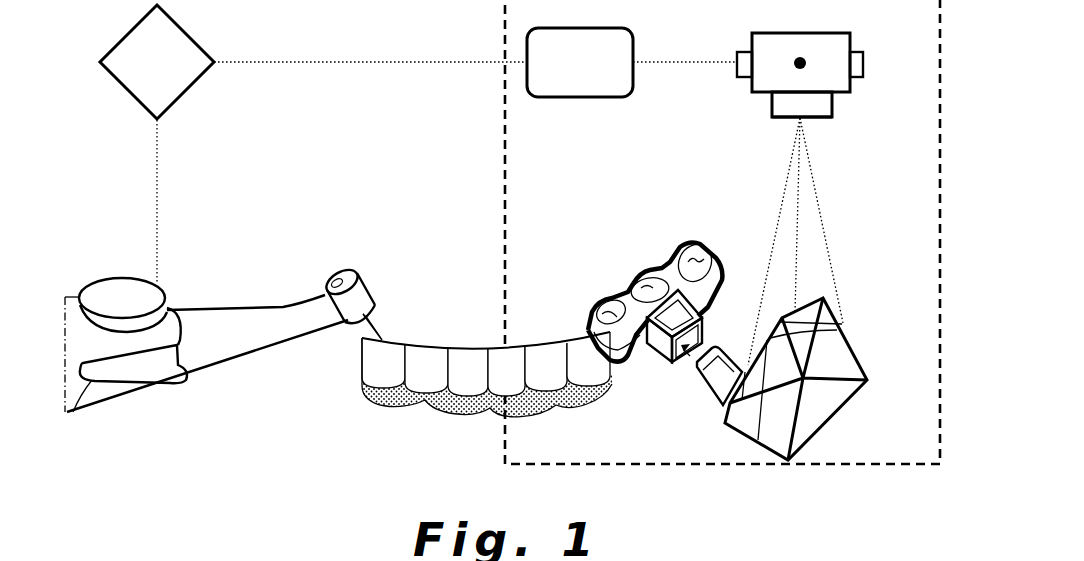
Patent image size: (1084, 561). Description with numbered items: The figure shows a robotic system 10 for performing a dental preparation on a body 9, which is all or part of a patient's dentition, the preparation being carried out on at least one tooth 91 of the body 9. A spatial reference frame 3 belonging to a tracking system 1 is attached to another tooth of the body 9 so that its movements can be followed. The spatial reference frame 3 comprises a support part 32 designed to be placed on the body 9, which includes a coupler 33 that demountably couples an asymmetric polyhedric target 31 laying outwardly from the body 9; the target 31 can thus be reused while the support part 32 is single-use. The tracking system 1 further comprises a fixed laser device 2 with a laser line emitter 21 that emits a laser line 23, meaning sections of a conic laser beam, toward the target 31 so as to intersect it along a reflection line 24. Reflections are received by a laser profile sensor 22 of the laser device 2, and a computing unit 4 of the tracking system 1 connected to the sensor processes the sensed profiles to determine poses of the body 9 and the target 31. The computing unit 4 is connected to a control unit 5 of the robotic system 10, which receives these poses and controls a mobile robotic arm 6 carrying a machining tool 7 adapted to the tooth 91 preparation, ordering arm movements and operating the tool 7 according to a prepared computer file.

The tracking system 1 is at (897, 482).
The laser device 2 is at (775, 47).
The laser line emitter 21 is at (778, 129).
The laser profile sensor 22 is at (813, 103).
The laser line 23 is at (790, 220).
The reflection line 24 is at (843, 320).
The spatial reference frame 3 is at (638, 408).
The asymmetric polyhedric target 31 is at (825, 403).
The support part 32 is at (653, 268).
The coupler 33 is at (702, 378).
The computing unit 4 is at (571, 76).
The control unit 5 is at (149, 76).
The mobile robotic arm 6 is at (102, 390).
The machining tool 7 is at (290, 320).
The body 9 is at (440, 307).
The tooth 91 is at (372, 372).
The robotic system 10 is at (218, 424).